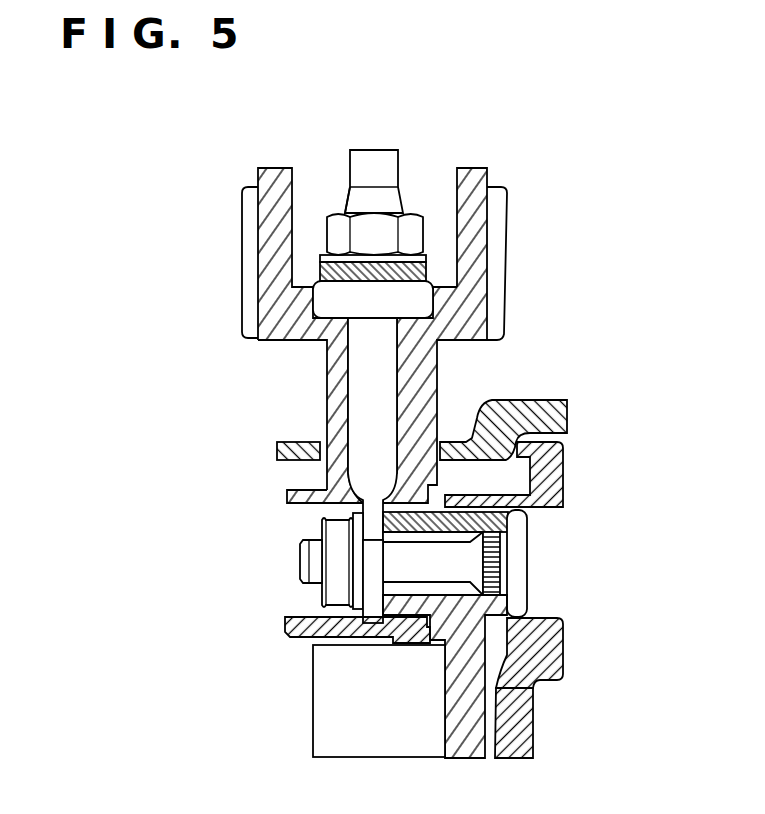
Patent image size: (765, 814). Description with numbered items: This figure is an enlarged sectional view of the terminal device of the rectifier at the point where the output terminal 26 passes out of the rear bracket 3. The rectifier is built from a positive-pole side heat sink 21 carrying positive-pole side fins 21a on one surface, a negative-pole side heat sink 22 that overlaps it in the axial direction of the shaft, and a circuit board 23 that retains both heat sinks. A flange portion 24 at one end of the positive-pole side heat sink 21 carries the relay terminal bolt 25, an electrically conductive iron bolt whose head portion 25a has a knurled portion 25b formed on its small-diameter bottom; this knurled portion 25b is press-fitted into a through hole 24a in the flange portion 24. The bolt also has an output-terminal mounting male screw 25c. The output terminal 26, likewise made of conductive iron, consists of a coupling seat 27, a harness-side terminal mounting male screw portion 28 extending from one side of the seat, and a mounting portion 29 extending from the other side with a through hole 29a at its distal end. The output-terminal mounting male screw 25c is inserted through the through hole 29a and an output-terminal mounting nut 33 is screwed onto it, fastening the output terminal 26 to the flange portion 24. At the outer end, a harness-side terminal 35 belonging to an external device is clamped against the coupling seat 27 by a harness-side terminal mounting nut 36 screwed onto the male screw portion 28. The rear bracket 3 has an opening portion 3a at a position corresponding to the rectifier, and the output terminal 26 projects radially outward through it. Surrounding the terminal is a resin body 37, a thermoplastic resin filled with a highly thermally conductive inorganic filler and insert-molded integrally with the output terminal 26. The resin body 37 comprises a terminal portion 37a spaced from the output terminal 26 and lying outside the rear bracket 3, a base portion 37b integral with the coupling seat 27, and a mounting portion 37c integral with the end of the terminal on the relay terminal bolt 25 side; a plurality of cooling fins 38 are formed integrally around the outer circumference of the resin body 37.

The rear bracket 3 is at (533, 417).
The opening portion 3a is at (370, 515).
The positive-pole side heat sink 21 is at (463, 743).
The positive-pole side fins 21a is at (420, 747).
The negative-pole side heat sink 22 is at (430, 644).
The circuit board 23 is at (552, 648).
The flange portion 24 is at (467, 645).
The through hole 24a is at (492, 568).
The relay terminal bolt 25 is at (527, 530).
The head portion 25a is at (512, 588).
The knurled portion 25b is at (497, 567).
The output-terminal mounting male screw 25c is at (315, 550).
The output terminal 26 is at (382, 165).
The coupling seat 27 is at (333, 300).
The harness-side terminal mounting male screw portion 28 is at (345, 205).
The mounting portion 29 is at (395, 478).
The through hole 29a is at (393, 630).
The output-terminal mounting nut 33 is at (340, 590).
The harness-side terminal 35 is at (318, 272).
The harness-side terminal mounting nut 36 is at (407, 238).
The resin body 37 is at (472, 168).
The terminal portion 37a is at (470, 262).
The base portion 37b is at (447, 317).
The mounting portion 37c is at (286, 505).
The cooling fins 38 is at (252, 212).